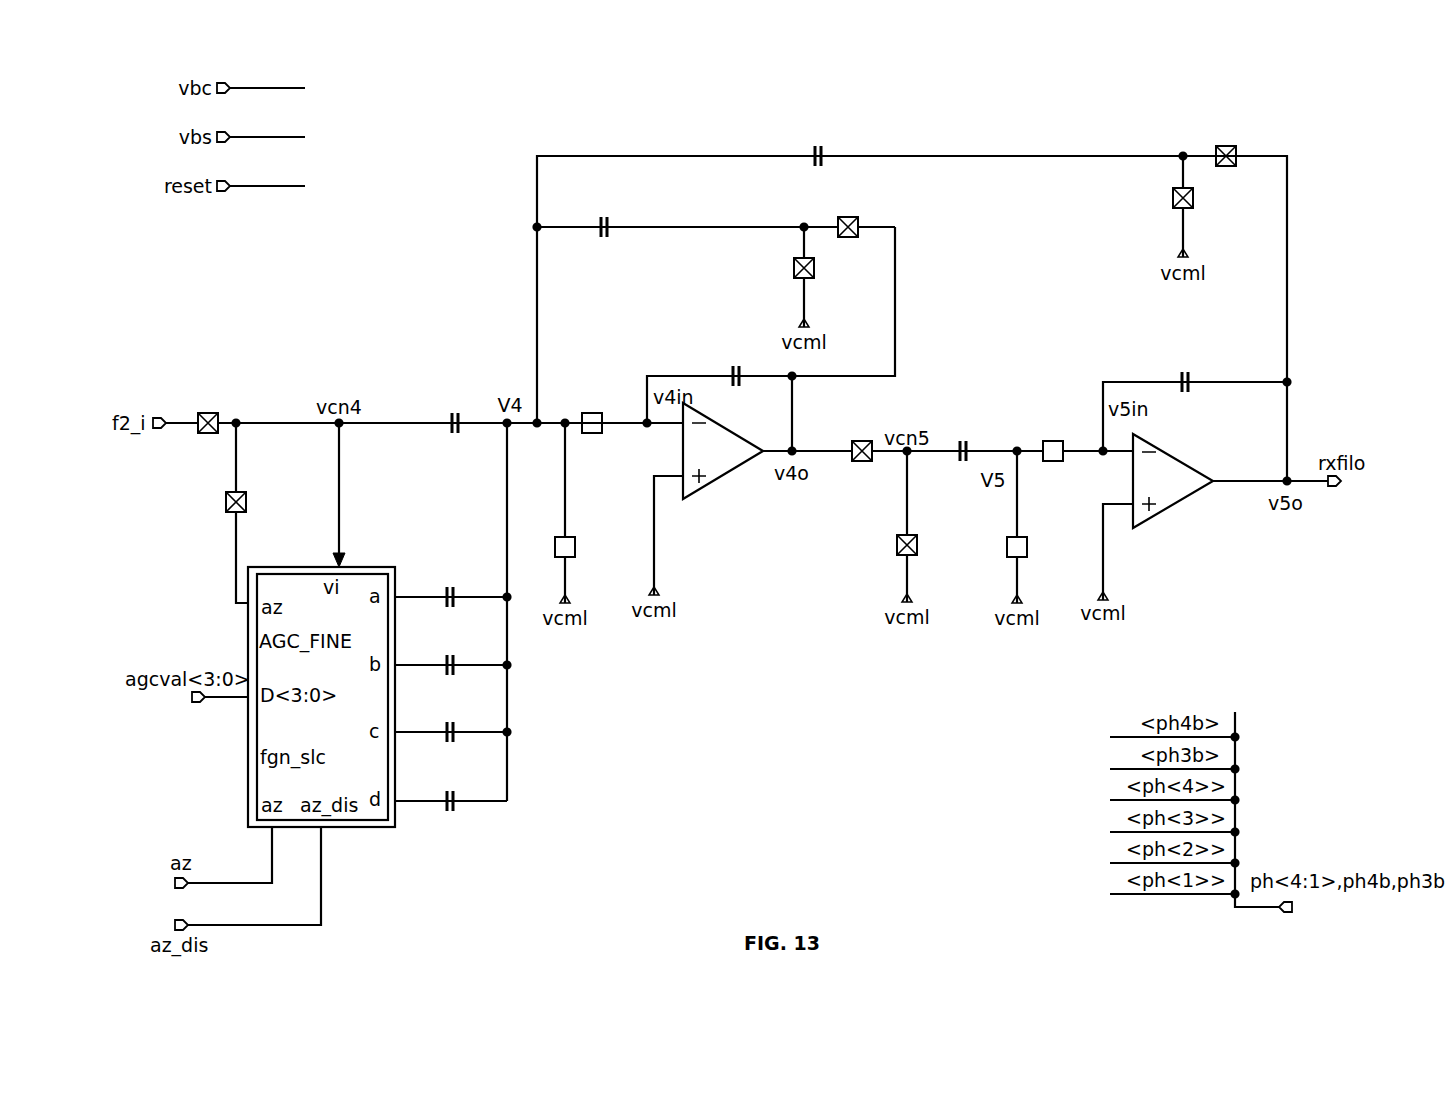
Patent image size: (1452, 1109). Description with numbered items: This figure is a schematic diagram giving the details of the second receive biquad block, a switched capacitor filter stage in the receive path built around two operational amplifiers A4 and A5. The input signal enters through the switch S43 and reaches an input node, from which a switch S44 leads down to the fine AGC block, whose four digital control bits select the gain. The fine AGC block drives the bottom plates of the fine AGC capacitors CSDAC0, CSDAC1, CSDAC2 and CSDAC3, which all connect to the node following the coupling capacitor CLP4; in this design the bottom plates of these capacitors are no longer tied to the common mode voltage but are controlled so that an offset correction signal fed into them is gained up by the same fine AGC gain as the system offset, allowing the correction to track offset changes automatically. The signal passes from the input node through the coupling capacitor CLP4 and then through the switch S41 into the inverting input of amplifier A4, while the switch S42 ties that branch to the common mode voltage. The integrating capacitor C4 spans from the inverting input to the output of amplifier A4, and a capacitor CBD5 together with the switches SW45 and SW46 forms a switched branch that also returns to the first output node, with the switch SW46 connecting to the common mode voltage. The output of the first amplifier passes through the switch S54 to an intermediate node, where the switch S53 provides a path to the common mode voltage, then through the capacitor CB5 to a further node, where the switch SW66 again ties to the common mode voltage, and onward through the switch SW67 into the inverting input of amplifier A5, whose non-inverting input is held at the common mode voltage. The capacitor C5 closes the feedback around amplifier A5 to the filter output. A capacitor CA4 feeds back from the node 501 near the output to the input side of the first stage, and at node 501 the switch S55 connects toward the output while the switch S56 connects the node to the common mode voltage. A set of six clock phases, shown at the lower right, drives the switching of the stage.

The node between CA4 and S55 501 is at (1164, 146).
The input switch S43 is at (207, 423).
The auto-zero switch S44 is at (244, 515).
The switch rs1_60 S41 is at (591, 427).
The switch RS2_60 S42 is at (578, 564).
The coupling capacitor CLP4 is at (454, 410).
The DAC capacitor 0 CSDAC0 is at (450, 586).
The DAC capacitor 1 CSDAC1 is at (450, 654).
The DAC capacitor 2 CSDAC2 is at (450, 720).
The DAC capacitor 3 CSDAC3 is at (450, 789).
The capacitor CBD5 is at (603, 216).
The feedback capacitor CA4 is at (818, 144).
The switch SW45 is at (854, 233).
The switch SW46 is at (802, 285).
The integrating capacitor C4 is at (735, 364).
The operational amplifier A4 is at (727, 453).
The switch S54 is at (861, 456).
The switch S53 is at (880, 565).
The capacitor CB5 is at (963, 440).
The switch SW67 is at (1052, 457).
The switch SW66 is at (1021, 564).
The integrating capacitor C5 is at (1184, 370).
The operational amplifier A5 is at (1175, 483).
The switch S55 is at (1241, 163).
The switch S56 is at (1191, 215).